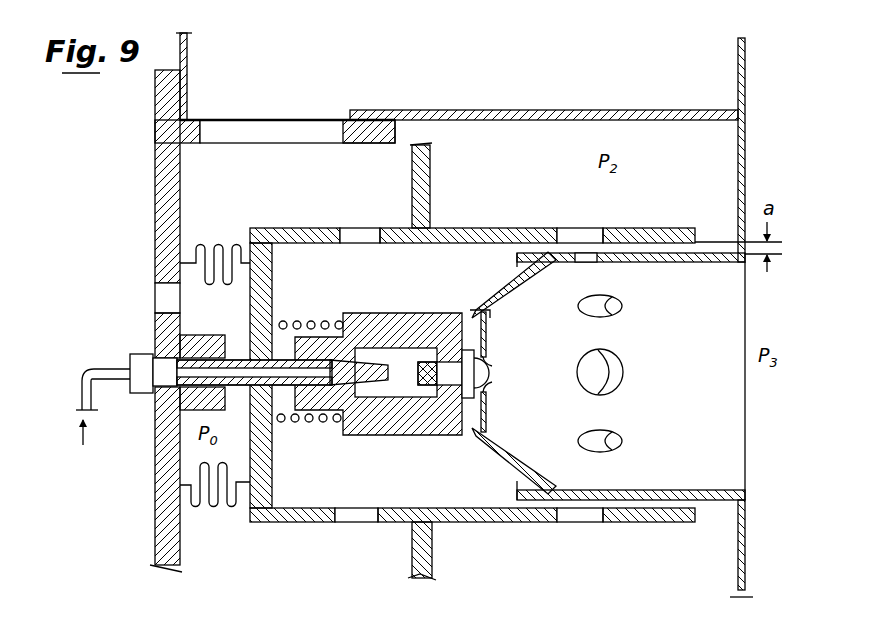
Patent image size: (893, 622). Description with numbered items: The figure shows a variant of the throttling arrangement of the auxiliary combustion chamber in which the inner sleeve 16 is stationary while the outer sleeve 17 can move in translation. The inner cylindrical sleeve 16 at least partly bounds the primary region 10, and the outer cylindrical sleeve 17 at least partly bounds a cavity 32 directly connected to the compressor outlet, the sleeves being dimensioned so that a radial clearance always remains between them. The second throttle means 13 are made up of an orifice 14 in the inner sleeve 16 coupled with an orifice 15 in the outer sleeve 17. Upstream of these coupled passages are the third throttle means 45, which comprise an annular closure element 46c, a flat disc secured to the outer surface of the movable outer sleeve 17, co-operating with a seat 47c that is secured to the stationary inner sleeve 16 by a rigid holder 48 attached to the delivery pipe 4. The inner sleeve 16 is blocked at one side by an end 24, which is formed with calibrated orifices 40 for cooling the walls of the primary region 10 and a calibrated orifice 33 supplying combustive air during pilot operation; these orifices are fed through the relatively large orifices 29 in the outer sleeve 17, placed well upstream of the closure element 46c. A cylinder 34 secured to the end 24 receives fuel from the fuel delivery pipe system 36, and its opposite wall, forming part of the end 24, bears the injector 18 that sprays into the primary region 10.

The delivery pipe 4 is at (536, 60).
The seat 47c is at (398, 138).
The third throttle means 45 is at (396, 155).
The annular closure element 46c is at (430, 186).
The cavity 32 is at (298, 197).
The orifices 29 is at (356, 243).
The orifice 15 is at (590, 238).
The outer cylindrical sleeve 17 is at (655, 241).
The second throttle means 13 is at (576, 221).
The cylinder 34 is at (380, 437).
The fuel delivery pipe system 36 is at (88, 392).
The injector 18 is at (490, 370).
The calibrated orifice 33 is at (481, 314).
The calibrated orifices 40 is at (498, 292).
The inner cylindrical sleeve 16 is at (676, 263).
The orifice 14 is at (598, 265).
The end 24 is at (516, 484).
The rigid holder 48 is at (738, 172).
The primary region 10 is at (698, 433).